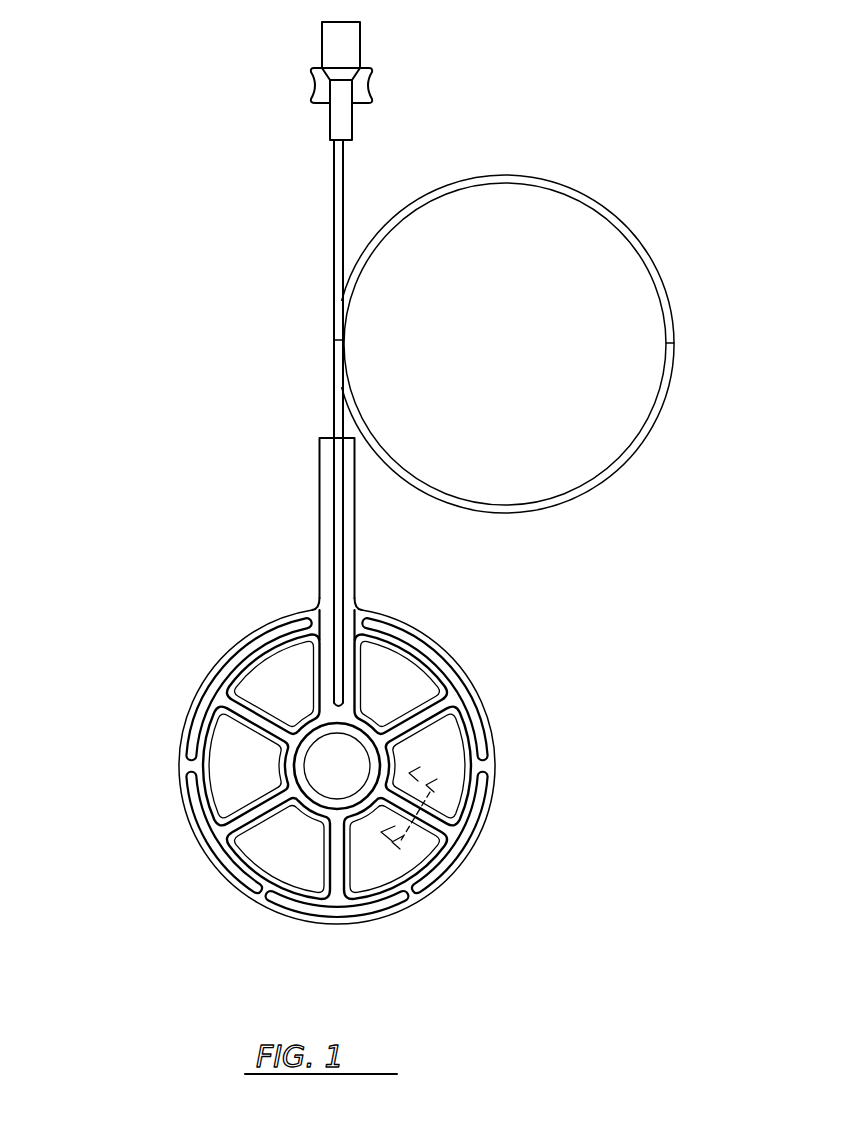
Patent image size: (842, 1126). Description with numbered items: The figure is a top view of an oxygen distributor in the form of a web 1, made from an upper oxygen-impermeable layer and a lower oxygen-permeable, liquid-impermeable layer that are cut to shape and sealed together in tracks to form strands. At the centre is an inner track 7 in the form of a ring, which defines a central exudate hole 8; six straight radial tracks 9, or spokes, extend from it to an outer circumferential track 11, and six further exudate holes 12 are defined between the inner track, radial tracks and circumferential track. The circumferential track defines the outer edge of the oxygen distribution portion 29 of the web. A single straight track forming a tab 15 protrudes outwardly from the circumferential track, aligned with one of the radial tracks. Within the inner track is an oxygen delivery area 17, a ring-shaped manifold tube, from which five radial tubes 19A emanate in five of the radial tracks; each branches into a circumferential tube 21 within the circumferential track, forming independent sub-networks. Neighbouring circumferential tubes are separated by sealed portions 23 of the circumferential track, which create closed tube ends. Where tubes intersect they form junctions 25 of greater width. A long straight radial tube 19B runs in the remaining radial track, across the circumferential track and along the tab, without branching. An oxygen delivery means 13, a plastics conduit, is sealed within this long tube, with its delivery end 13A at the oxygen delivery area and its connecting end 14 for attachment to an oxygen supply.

The web 1 is at (120, 317).
The connecting end 14 is at (348, 47).
The oxygen delivery means 13 is at (602, 475).
The delivery end 13A is at (248, 653).
The tab 15 is at (348, 548).
The long straight radial tube 19B is at (330, 512).
The radial tubes 19A is at (257, 817).
The circumferential track 11 is at (430, 648).
The exudate holes 12 is at (401, 684).
The central exudate hole 8 is at (337, 766).
The junctions 25 is at (453, 702).
The radial tracks 9 is at (428, 727).
The sealed portions 23 is at (407, 900).
The circumferential tube 21 is at (197, 740).
The oxygen delivery area 17 is at (290, 777).
The oxygen distribution portion 29 is at (327, 788).
The inner track 7 is at (360, 813).